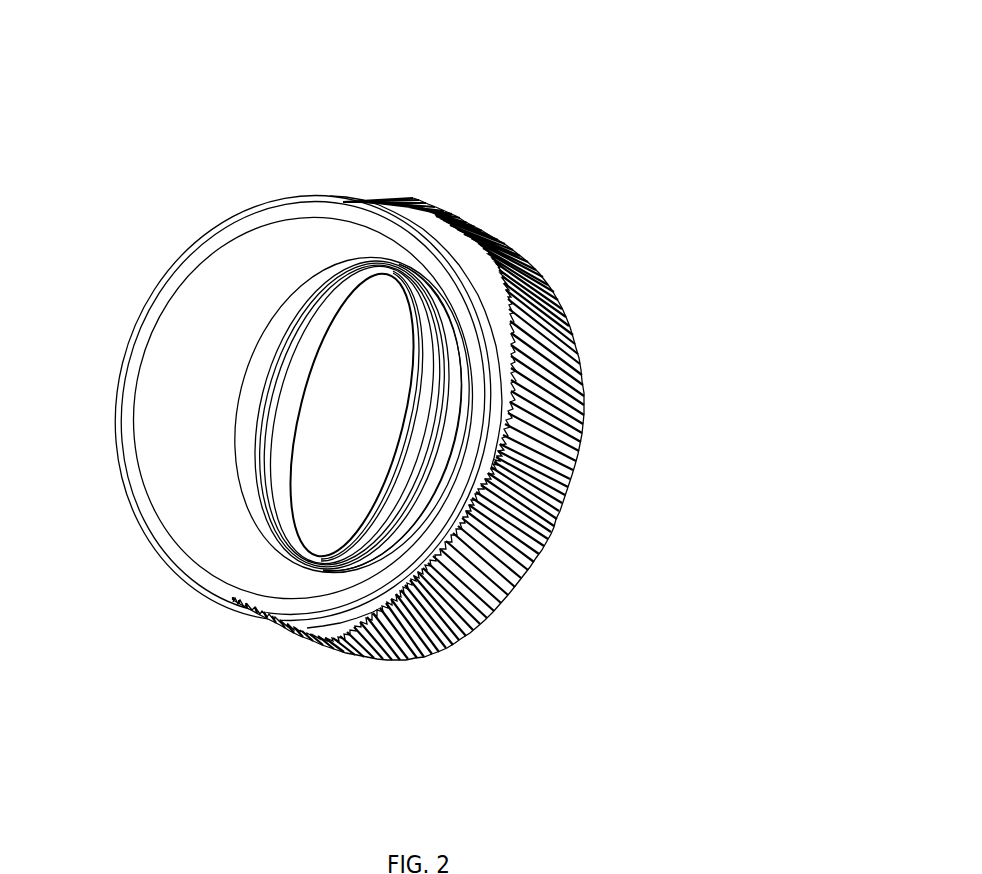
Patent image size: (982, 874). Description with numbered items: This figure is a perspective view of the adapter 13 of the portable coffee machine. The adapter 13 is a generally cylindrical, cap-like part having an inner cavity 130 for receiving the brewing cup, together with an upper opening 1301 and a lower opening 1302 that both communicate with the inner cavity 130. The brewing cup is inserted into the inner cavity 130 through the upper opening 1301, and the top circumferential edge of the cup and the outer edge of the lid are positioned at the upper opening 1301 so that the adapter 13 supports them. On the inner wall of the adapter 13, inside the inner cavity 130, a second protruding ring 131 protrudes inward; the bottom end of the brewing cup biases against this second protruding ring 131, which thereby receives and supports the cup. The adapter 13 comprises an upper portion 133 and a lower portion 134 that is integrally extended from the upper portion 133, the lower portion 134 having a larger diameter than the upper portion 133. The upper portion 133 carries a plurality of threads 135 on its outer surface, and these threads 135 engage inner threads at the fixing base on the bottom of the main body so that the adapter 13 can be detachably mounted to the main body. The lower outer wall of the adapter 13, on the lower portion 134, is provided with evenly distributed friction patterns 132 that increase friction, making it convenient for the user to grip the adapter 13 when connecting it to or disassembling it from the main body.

The adapter 13 is at (317, 195).
The inner cavity 130 is at (285, 498).
The second protruding ring 131 is at (307, 385).
The upper opening 1301 is at (258, 242).
The lower opening 1302 is at (387, 377).
The friction patterns 132 is at (557, 513).
The upper portion 133 is at (400, 242).
The lower portion 134 is at (458, 610).
The threads 135 is at (443, 403).